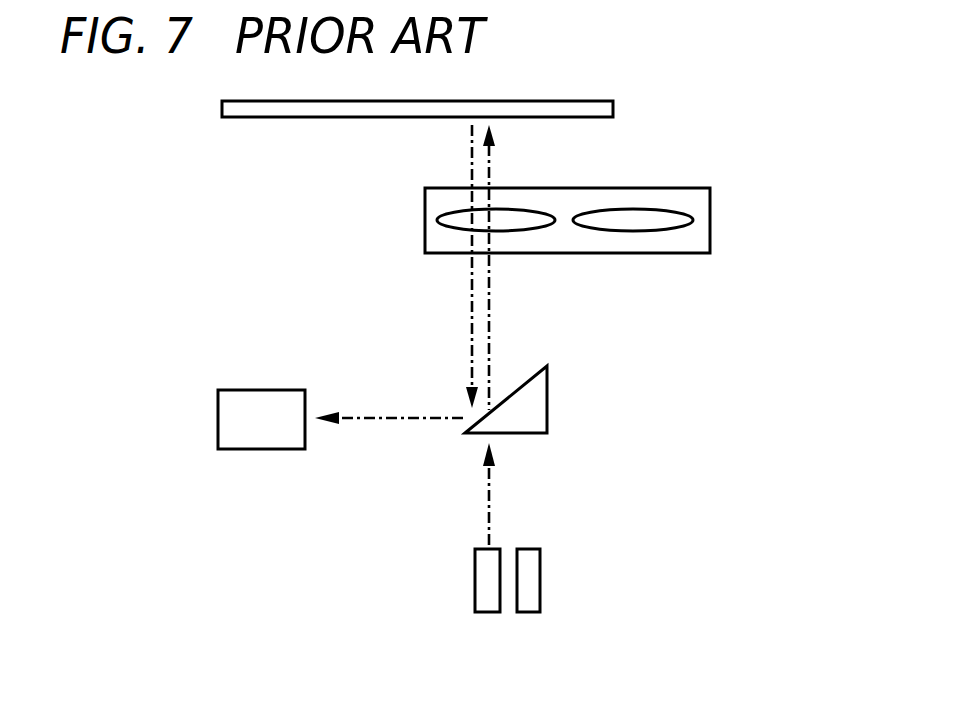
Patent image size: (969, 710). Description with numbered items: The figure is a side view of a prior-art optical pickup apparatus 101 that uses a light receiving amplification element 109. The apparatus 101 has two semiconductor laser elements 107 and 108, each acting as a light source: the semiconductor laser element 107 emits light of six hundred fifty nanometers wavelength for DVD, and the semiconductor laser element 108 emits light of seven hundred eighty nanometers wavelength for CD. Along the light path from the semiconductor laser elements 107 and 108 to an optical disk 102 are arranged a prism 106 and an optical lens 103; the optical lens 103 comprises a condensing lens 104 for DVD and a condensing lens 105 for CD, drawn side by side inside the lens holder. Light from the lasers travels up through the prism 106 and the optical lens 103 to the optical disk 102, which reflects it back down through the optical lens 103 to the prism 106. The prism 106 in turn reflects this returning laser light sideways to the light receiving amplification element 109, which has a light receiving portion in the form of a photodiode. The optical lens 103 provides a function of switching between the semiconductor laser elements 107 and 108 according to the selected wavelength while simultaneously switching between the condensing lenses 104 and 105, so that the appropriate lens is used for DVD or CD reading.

The optical pickup apparatus 101 is at (719, 80).
The optical disk 102 is at (577, 108).
The optical lens 103 is at (612, 208).
The condensing lens for DVD 104 is at (458, 218).
The condensing lens for CD 105 is at (665, 228).
The prism 106 is at (535, 410).
The semiconductor laser element 107 is at (483, 590).
The semiconductor laser element 108 is at (530, 593).
The light receiving amplification element 109 is at (250, 440).